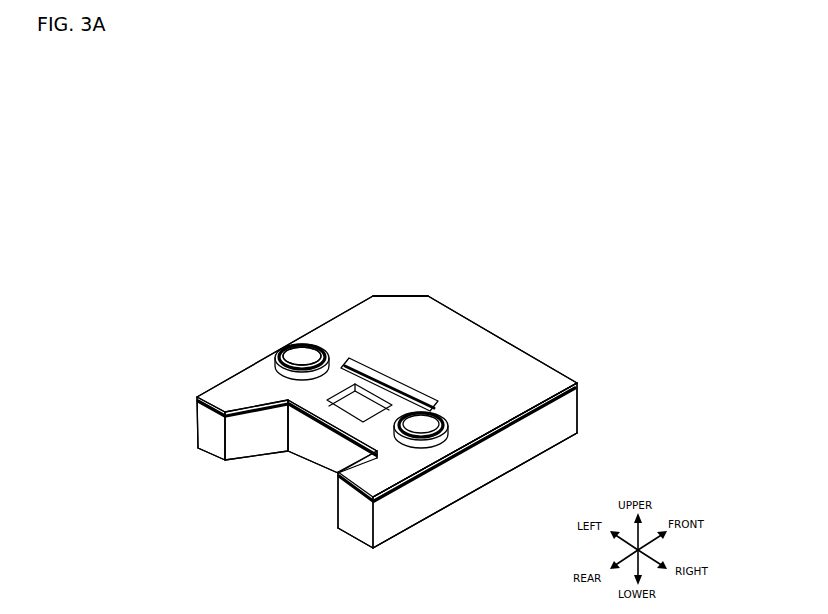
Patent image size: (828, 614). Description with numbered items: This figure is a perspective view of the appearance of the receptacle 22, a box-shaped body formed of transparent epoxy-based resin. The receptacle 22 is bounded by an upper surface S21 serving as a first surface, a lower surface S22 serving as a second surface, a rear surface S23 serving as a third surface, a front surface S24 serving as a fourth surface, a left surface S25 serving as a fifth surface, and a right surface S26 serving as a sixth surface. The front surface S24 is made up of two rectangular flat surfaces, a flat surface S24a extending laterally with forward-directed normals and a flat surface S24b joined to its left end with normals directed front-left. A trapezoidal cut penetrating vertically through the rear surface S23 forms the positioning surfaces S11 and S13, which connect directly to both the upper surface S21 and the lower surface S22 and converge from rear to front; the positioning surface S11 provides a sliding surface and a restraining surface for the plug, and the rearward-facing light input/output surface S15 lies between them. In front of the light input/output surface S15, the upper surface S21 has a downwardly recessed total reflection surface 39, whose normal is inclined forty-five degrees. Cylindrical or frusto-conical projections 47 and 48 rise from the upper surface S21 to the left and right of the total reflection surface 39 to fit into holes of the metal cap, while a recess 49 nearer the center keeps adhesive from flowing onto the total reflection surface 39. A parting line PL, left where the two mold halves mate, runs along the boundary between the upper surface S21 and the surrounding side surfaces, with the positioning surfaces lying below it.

The receptacle 22 is at (163, 195).
The projection 47 is at (300, 355).
The projection 48 is at (428, 428).
The total reflection surface 39 is at (360, 408).
The recess 49 is at (418, 396).
The parting line PL is at (540, 410).
The positioning surface S11 is at (345, 458).
The positioning surface S13 is at (258, 450).
The light input/output surface S15 is at (310, 450).
The upper surface S21 is at (430, 343).
The lower surface S22 is at (457, 503).
The rear surface S23 is at (220, 452).
The front surface S24 is at (630, 174).
The flat surface S24a is at (527, 352).
The flat surface S24b is at (403, 295).
The left surface S25 is at (298, 353).
The right surface S26 is at (483, 465).